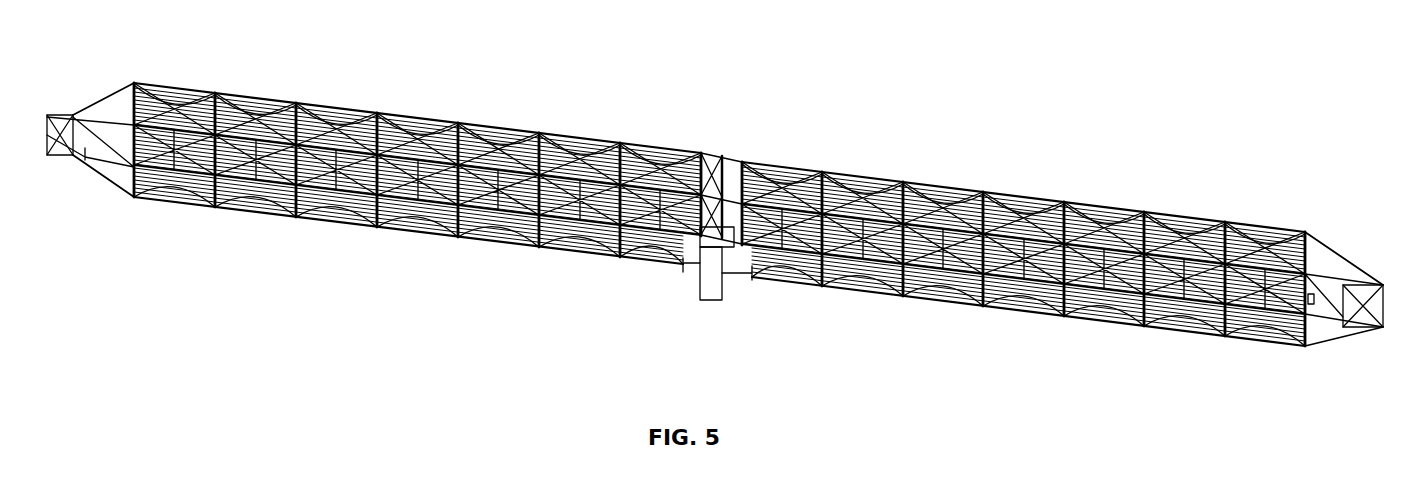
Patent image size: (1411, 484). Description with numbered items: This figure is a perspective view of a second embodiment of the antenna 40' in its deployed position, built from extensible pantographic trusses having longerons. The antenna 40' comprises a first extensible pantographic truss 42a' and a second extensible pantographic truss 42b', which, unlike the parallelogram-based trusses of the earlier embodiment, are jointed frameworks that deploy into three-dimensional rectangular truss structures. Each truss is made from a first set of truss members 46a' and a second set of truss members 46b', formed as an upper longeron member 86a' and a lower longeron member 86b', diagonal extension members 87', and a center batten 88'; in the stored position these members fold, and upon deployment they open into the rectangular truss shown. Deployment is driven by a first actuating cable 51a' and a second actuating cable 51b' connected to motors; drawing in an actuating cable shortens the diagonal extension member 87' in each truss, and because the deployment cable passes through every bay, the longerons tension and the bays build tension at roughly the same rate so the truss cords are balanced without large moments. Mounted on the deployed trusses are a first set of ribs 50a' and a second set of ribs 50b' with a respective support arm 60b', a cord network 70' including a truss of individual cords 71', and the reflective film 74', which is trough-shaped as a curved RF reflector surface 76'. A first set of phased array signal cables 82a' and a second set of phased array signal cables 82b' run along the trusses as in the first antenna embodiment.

The antenna 40' is at (717, 213).
The cord network 70' is at (366, 154).
The truss of individual cords 71' is at (417, 105).
The reflective film 74' is at (417, 143).
The curved RF reflector surface 76' is at (417, 170).
The first set of truss members 46a' is at (417, 161).
The first set of ribs 50a' is at (417, 186).
The first set of phased array signal cables 82a' is at (408, 242).
The upper longeron member 86a' is at (90, 97).
The lower longeron member 86b' is at (93, 190).
The diagonal extension member 87' is at (52, 108).
The first extensible pantographic truss 42a' is at (103, 68).
The first actuating cable 51a' is at (691, 253).
The second actuating cable 51b' is at (755, 311).
The second set of truss members 46b' is at (1023, 251).
The second set of ribs 50b' is at (1023, 262).
The second set of phased array signal cables 82b' is at (1028, 322).
The second extensible pantographic truss 42b' is at (1346, 259).
The center batten 88' is at (1373, 274).
The support arm 60b' is at (1344, 349).